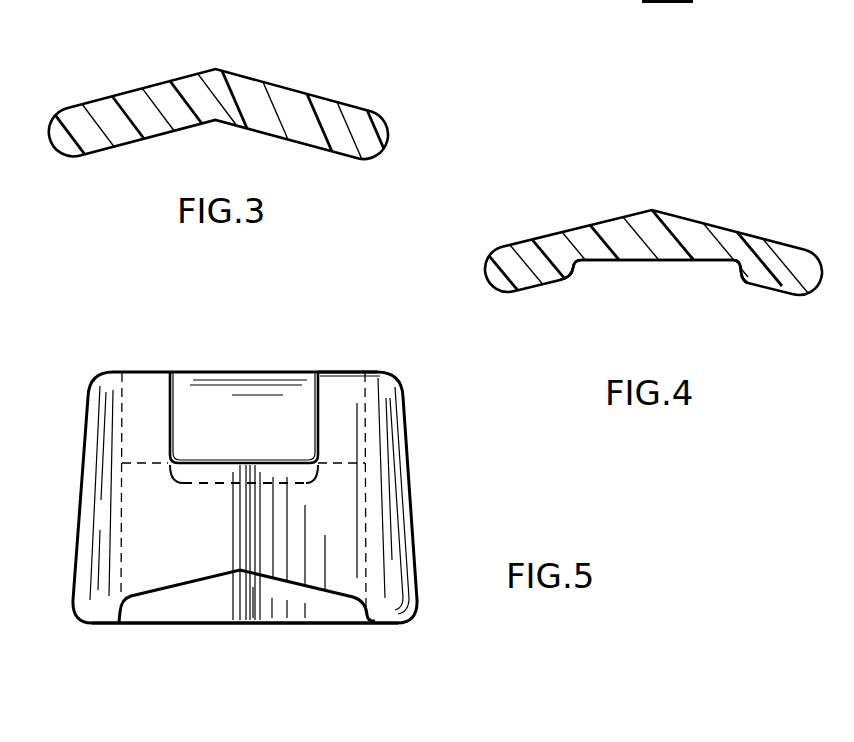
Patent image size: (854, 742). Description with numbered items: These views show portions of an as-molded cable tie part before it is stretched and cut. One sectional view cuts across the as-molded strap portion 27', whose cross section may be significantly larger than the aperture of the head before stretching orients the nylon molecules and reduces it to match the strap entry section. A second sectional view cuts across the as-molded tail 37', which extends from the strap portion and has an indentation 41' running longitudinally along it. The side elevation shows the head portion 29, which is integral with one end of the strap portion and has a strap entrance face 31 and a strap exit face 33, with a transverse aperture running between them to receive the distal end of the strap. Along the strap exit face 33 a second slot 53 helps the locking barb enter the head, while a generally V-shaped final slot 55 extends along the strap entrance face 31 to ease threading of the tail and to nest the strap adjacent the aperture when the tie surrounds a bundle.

In FIG. 3, the strap portion 27' is at (217, 95).
In FIG. 4, the tail 37' is at (646, 225).
In FIG. 4, the indentation 41' is at (654, 307).
In FIG. 5, the head portion 29 is at (413, 515).
In FIG. 5, the strap entrance face 31 is at (157, 620).
In FIG. 5, the strap exit face 33 is at (347, 371).
In FIG. 5, the second slot 53 is at (255, 393).
In FIG. 5, the final slot 55 is at (292, 610).